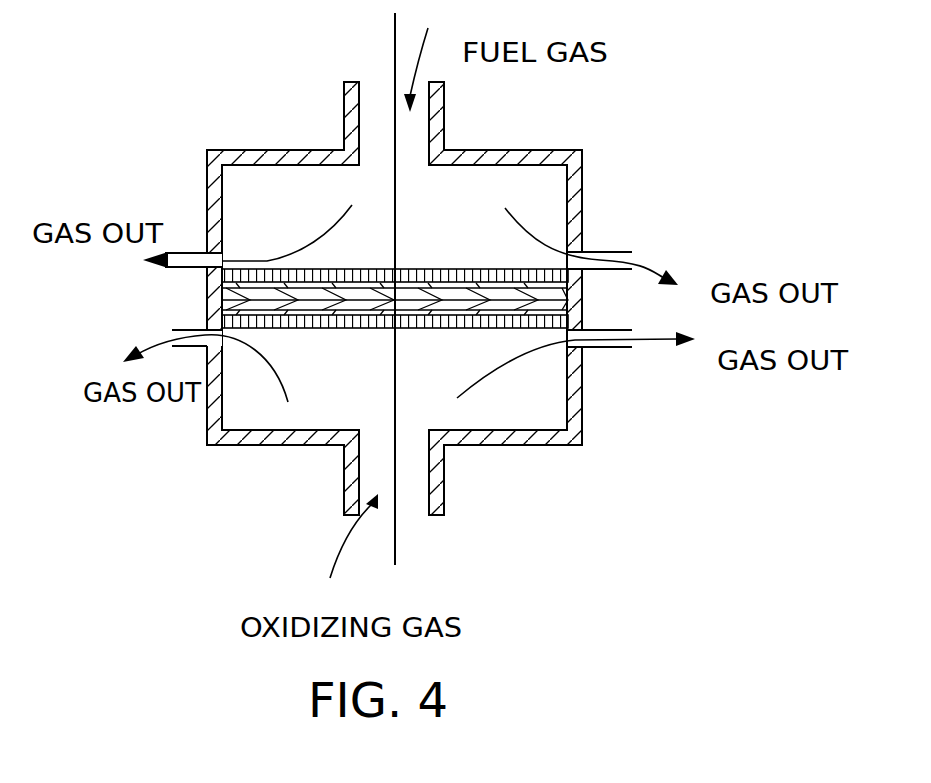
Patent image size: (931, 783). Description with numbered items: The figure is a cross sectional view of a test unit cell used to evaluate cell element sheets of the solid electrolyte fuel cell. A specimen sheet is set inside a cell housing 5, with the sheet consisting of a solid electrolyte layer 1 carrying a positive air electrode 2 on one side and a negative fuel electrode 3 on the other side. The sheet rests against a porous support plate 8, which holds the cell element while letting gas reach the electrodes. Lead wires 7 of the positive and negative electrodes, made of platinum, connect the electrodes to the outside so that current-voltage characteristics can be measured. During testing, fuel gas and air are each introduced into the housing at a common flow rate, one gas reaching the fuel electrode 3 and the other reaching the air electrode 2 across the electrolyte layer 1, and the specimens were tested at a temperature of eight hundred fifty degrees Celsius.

The solid electrolyte layer 1 is at (235, 300).
The positive air electrode 2 is at (552, 315).
The negative fuel electrode 3 is at (568, 236).
The cell housing 5 is at (214, 447).
The lead wires of positive and negative electrodes 7 is at (394, 46).
The porous support plate 8 is at (490, 282).